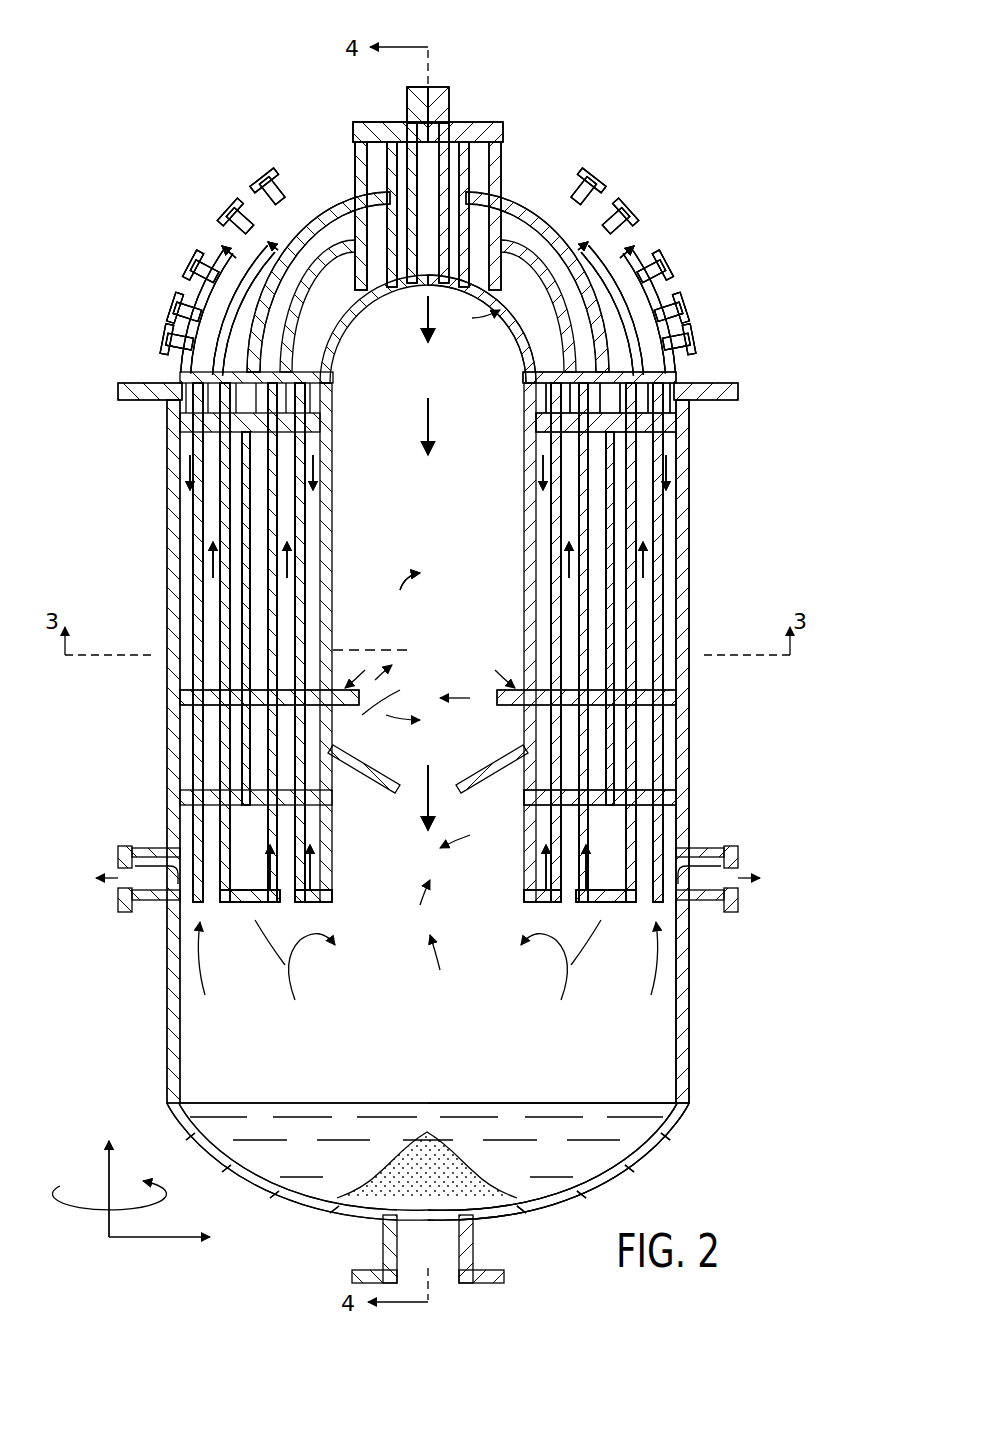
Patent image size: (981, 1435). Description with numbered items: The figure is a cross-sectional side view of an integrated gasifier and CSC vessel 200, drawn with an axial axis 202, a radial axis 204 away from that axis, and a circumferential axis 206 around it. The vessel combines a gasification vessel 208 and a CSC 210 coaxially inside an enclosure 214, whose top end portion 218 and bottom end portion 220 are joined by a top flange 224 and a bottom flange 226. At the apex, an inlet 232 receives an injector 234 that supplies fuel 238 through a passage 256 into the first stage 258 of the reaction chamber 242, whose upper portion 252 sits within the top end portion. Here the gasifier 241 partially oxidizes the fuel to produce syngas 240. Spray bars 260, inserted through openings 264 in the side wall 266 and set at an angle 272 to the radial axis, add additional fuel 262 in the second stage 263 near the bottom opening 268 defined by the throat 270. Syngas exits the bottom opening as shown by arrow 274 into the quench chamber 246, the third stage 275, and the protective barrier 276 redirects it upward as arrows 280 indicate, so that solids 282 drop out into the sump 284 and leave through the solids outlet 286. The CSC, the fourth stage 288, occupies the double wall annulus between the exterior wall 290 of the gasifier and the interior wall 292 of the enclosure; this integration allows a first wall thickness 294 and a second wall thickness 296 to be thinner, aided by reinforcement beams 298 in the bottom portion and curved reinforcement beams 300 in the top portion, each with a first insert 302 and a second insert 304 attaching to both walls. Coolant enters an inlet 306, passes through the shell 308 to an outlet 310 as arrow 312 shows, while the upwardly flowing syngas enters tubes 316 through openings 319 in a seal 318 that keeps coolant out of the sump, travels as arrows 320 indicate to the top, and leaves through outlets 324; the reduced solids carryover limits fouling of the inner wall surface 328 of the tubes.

The integrated gasifier and CSC vessel 200 is at (128, 66).
The axial axis 202 is at (111, 1172).
The radial axis 204 is at (405, 650).
The circumferential axis 206 is at (138, 1205).
The gasification vessel 208 is at (140, 215).
The CSC 210 is at (182, 578).
The enclosure 214 is at (380, 175).
The top end portion 218 is at (735, 80).
The bottom end portion 220 is at (732, 694).
The top flange 224 is at (125, 383).
The bottom flange 226 is at (150, 401).
The inlet 232 is at (450, 165).
The injector 234 is at (467, 128).
The fuel 238 is at (425, 320).
The syngas 240 is at (432, 420).
The gasifier 241 is at (318, 262).
The reaction chamber 242 is at (412, 506).
The quench chamber 246 is at (455, 955).
The upper portion 252 is at (512, 326).
The passage 256 is at (395, 165).
The first stage 258 is at (394, 592).
The spray bars 260 is at (367, 672).
The additional fuel 262 is at (373, 705).
The second stage 263 is at (440, 695).
The openings 264 is at (350, 715).
The side wall 266 is at (560, 530).
The bottom opening 268 is at (412, 806).
The throat 270 is at (350, 772).
The angle 272 is at (380, 672).
The syngas exit flow 274 is at (430, 795).
The third stage 275 is at (475, 832).
The protective barrier 276 is at (340, 885).
The upward syngas flow 280 is at (427, 975).
The solids 282 is at (480, 1172).
The sump 284 is at (335, 1128).
The solids outlet 286 is at (480, 1283).
The fourth stage 288 is at (660, 790).
The exterior wall 290 is at (335, 335).
The interior wall 292 is at (185, 715).
The first wall thickness 294 is at (464, 319).
The second wall thickness 296 is at (165, 285).
The reinforcement beams 298 is at (305, 455).
The reinforcement beams 300 is at (318, 210).
The first insert 302 is at (326, 210).
The second insert 304 is at (333, 405).
The inlet 306 is at (238, 212).
The shell 308 is at (300, 530).
The outlet 310 is at (135, 905).
The coolant flow 312 is at (262, 190).
The tubes 316 is at (268, 912).
The seal 318 is at (245, 905).
The openings 319 is at (300, 920).
The syngas flow through tubes 320 is at (208, 252).
The outlets 324 is at (197, 262).
The inner wall surface 328 is at (540, 612).